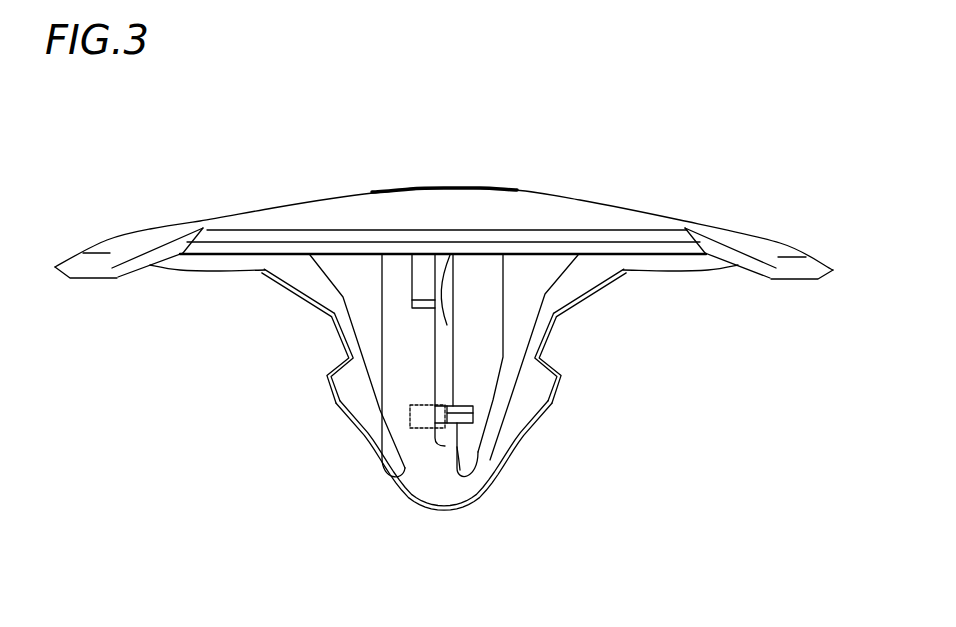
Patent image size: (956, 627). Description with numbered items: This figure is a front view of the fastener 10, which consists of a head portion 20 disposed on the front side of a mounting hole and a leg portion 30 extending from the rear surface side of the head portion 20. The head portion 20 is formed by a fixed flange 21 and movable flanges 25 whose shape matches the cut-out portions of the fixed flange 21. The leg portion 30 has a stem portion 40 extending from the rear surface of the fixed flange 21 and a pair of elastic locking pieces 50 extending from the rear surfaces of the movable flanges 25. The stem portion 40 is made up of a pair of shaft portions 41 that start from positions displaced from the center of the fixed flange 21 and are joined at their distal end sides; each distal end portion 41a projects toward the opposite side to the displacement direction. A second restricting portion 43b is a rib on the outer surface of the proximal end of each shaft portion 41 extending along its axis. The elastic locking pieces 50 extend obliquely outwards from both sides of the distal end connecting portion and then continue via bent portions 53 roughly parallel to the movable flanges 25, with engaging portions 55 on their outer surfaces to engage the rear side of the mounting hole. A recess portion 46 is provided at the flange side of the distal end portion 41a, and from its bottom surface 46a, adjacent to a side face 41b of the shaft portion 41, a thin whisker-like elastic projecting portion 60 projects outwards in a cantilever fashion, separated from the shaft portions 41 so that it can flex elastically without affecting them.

The fastener 10 is at (713, 192).
The head portion 20 is at (212, 72).
The fixed flange 21 is at (326, 206).
The movable flanges 25 is at (155, 225).
The leg portion 30 is at (423, 514).
The stem portion 40 is at (378, 342).
The shaft portions 41 is at (500, 318).
The distal end portion 41a is at (472, 450).
The side face 41b is at (440, 270).
The second restricting portion 43b is at (420, 273).
The recess portion 46 is at (447, 447).
The bottom surface 46a is at (460, 470).
The elastic locking pieces 50 is at (347, 432).
The bent portions 53 is at (312, 283).
The engaging portions 55 is at (326, 379).
The elastic projecting portions 60 is at (410, 408).